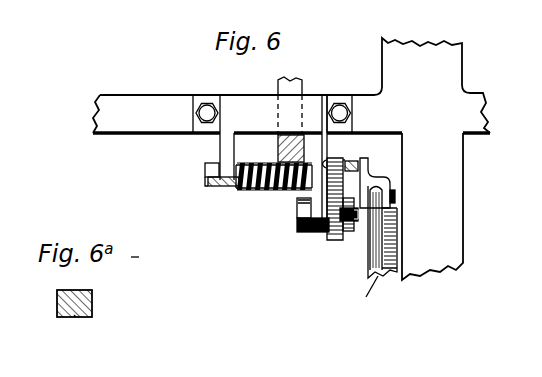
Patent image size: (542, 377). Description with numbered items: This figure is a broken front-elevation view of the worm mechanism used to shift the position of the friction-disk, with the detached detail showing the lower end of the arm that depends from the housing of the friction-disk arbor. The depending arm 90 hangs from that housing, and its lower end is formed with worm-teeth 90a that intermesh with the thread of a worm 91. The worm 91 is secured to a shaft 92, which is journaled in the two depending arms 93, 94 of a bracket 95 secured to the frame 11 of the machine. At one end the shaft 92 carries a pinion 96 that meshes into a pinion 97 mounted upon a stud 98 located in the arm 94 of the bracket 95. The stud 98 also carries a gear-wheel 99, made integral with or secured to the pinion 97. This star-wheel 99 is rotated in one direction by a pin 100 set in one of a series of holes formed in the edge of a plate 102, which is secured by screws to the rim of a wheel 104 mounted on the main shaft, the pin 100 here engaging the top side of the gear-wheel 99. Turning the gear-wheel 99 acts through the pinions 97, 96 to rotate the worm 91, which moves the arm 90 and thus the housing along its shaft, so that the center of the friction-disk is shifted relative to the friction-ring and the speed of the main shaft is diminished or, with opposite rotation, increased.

In FIG. 6, the frame 11 is at (291, 159).
In FIG. 6, the depending arm 90 is at (290, 87).
In FIG. 6A, the depending arm 90 is at (58, 289).
In FIG. 6A, the worm-teeth 90a is at (75, 317).
In FIG. 6, the worm 91 is at (273, 189).
In FIG. 6, the shaft 92 is at (324, 163).
In FIG. 6, the depending arm 93 is at (220, 190).
In FIG. 6, the depending arm 94 is at (318, 190).
In FIG. 6, the bracket 95 is at (273, 156).
In FIG. 6, the pinion 96 is at (335, 162).
In FIG. 6, the pinion 97 is at (334, 237).
In FIG. 6, the stud 98 is at (346, 242).
In FIG. 6, the gear-wheel 99 is at (353, 232).
In FIG. 6, the pin 100 is at (356, 164).
In FIG. 6, the plate 102 is at (380, 184).
In FIG. 6, the wheel 104 is at (393, 241).